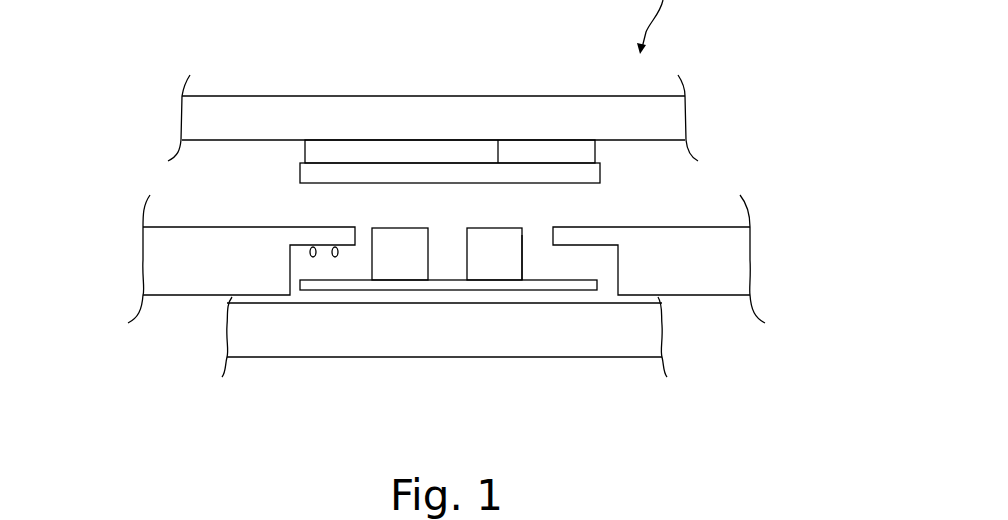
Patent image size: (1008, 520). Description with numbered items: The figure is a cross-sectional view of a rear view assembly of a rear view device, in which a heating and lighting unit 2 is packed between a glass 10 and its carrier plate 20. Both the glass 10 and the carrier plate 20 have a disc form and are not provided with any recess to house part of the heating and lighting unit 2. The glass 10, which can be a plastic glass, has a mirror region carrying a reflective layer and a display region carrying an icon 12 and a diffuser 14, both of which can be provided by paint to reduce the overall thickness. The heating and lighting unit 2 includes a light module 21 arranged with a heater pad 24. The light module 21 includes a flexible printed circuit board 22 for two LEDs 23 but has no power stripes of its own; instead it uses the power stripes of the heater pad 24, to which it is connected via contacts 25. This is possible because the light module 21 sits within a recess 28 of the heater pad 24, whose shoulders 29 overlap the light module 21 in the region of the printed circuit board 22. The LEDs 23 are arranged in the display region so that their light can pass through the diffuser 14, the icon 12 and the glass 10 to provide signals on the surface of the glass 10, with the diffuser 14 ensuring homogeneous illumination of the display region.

The heating and lighting unit 2 is at (800, 262).
The glass 10 is at (218, 103).
The icon 12 is at (583, 150).
The diffuser 14 is at (299, 173).
The carrier plate 20 is at (302, 313).
The light module 21 is at (531, 222).
The flexible printed circuit board 22 is at (530, 293).
The LEDs 23 is at (400, 268).
The heater pad 24 is at (158, 265).
The contacts 25 is at (347, 258).
The recess 28 is at (552, 242).
The shoulders 29 is at (320, 237).